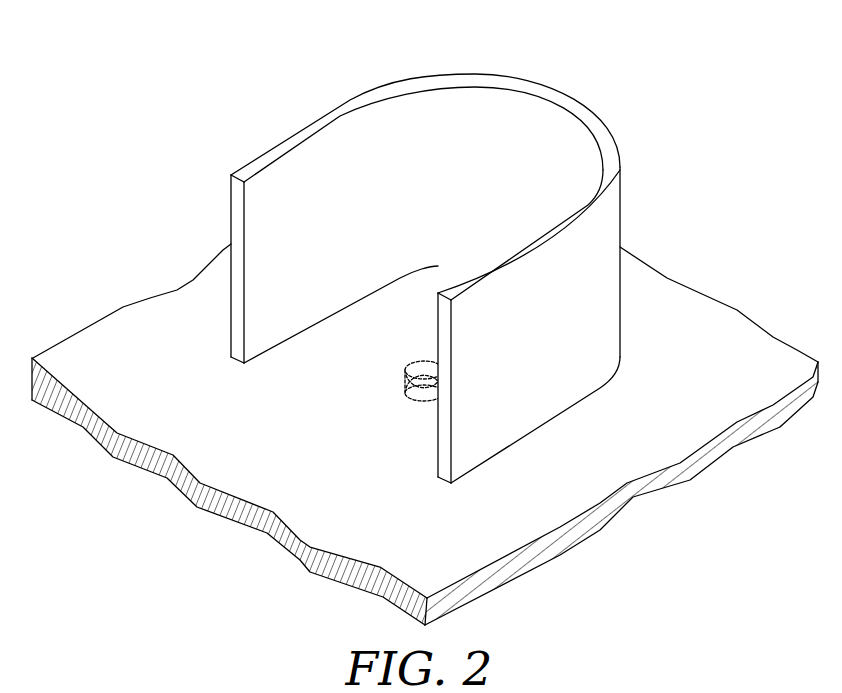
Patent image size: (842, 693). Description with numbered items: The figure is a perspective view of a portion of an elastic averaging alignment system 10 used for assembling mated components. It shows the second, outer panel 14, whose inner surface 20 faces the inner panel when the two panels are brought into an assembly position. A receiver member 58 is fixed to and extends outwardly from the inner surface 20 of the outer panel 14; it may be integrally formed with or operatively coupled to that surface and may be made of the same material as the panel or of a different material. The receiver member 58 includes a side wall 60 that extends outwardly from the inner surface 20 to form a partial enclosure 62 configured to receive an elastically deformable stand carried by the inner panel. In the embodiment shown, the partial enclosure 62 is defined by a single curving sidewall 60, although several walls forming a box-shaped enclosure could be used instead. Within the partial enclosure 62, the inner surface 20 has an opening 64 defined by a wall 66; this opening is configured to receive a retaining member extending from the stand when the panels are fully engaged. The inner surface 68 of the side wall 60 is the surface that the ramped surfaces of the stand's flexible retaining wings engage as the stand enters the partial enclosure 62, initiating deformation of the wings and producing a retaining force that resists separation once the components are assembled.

The elastic averaging alignment system 10 is at (437, 255).
The second outer panel 14 is at (423, 401).
The inner surface 20 is at (107, 367).
The receiver member 58 is at (461, 259).
The side wall 60 is at (543, 348).
The partial enclosure 62 is at (353, 348).
The opening 64 is at (370, 335).
The wall 66 is at (406, 372).
The inner surface of the side walls 68 is at (310, 170).